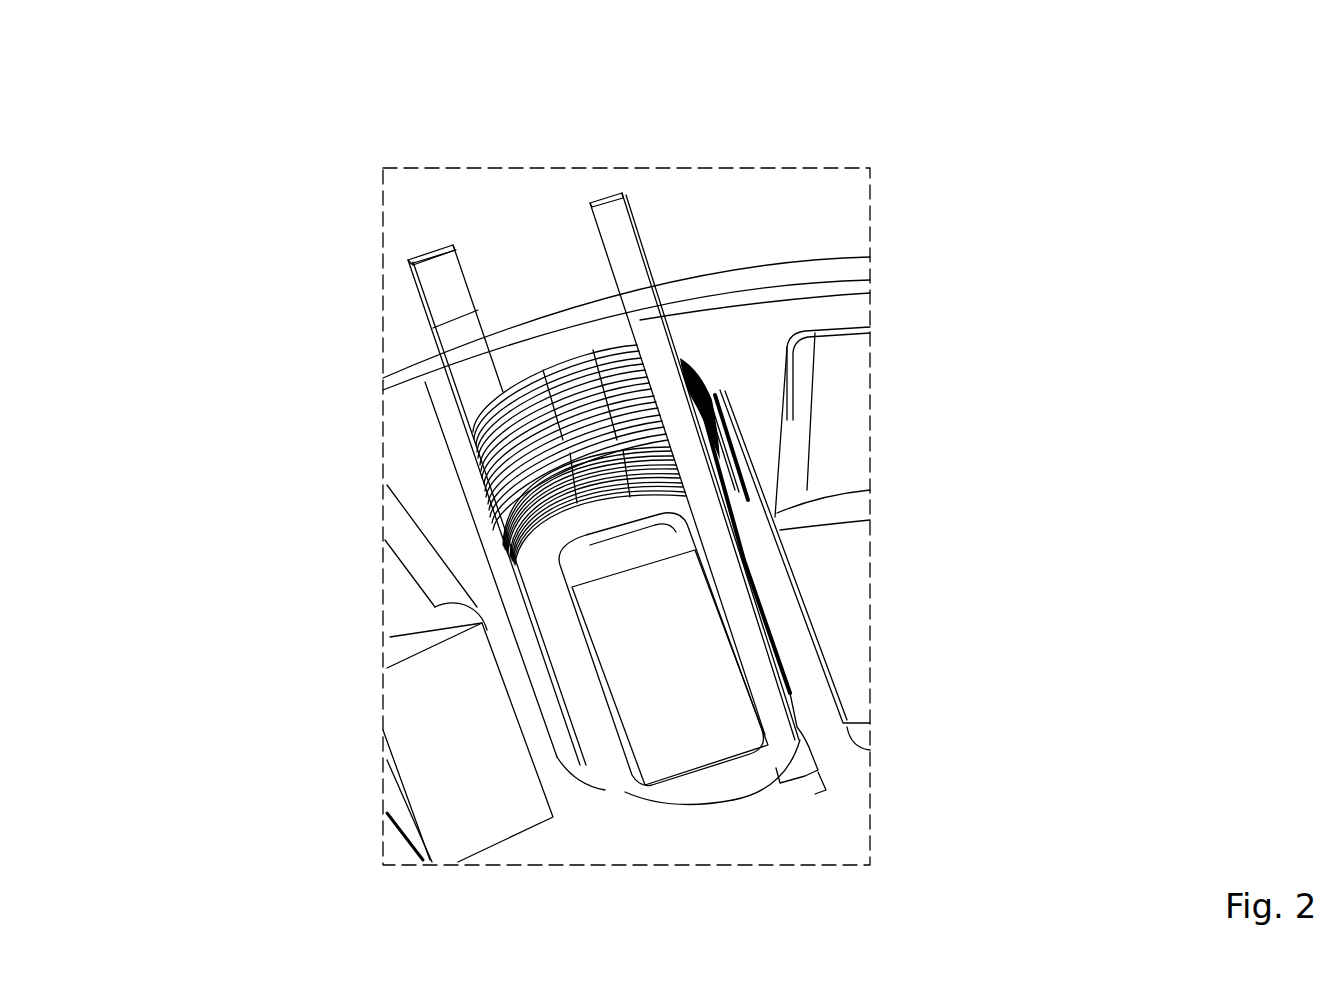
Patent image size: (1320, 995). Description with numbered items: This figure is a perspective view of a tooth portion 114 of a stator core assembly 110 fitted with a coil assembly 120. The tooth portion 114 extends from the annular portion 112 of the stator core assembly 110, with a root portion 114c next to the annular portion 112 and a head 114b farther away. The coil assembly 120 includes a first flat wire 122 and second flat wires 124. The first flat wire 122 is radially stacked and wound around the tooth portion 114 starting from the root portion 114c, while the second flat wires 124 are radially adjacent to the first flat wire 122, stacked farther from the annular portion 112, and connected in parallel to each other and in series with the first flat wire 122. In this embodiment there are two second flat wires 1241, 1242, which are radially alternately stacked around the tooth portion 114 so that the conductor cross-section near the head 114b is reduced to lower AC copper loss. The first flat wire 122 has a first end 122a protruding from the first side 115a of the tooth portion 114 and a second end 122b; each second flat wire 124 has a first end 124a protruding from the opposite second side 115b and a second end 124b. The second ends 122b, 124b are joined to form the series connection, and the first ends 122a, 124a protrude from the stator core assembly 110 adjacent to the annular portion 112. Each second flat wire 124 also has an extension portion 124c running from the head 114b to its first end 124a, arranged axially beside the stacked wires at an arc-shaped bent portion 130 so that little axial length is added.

The stator core assembly 110 is at (268, 88).
The annular portion 112 is at (787, 275).
The tooth portion 114 is at (636, 565).
The head 114b is at (693, 750).
The root portion 114c is at (566, 350).
The first side 115a is at (446, 426).
The second side 115b is at (683, 326).
The coil assembly 120 is at (587, 57).
The first flat wire 122 is at (642, 482).
The first end 122a is at (430, 258).
The second end 122b is at (822, 790).
The second flat wires 124 is at (705, 482).
The second flat wire 1241 is at (590, 198).
The second flat wire 1242 is at (603, 232).
The first end 124a is at (608, 197).
The second end 124b is at (803, 778).
The extension portion 124c is at (680, 405).
The arc-shaped bent portion 130 is at (700, 373).